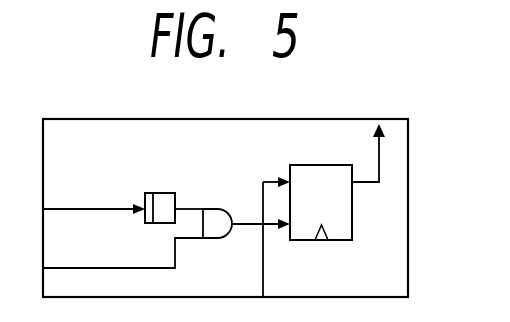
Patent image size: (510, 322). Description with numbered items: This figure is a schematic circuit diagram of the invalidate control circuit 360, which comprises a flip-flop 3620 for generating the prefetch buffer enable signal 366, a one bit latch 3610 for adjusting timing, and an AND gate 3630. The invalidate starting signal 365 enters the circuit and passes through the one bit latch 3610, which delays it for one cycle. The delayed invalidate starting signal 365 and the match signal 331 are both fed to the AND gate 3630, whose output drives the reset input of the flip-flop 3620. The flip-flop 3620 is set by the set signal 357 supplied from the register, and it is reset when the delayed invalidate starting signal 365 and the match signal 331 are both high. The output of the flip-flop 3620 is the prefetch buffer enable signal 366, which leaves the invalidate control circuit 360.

The invalidate control circuit 360 is at (307, 118).
The invalidate starting signal 365 is at (117, 205).
The match signal 331 is at (117, 267).
The one bit latch 3610 is at (165, 192).
The flip-flop 3620 is at (298, 165).
The AND gate 3630 is at (217, 242).
The set signal 357 is at (263, 277).
The prefetch buffer enable signal 366 is at (378, 157).